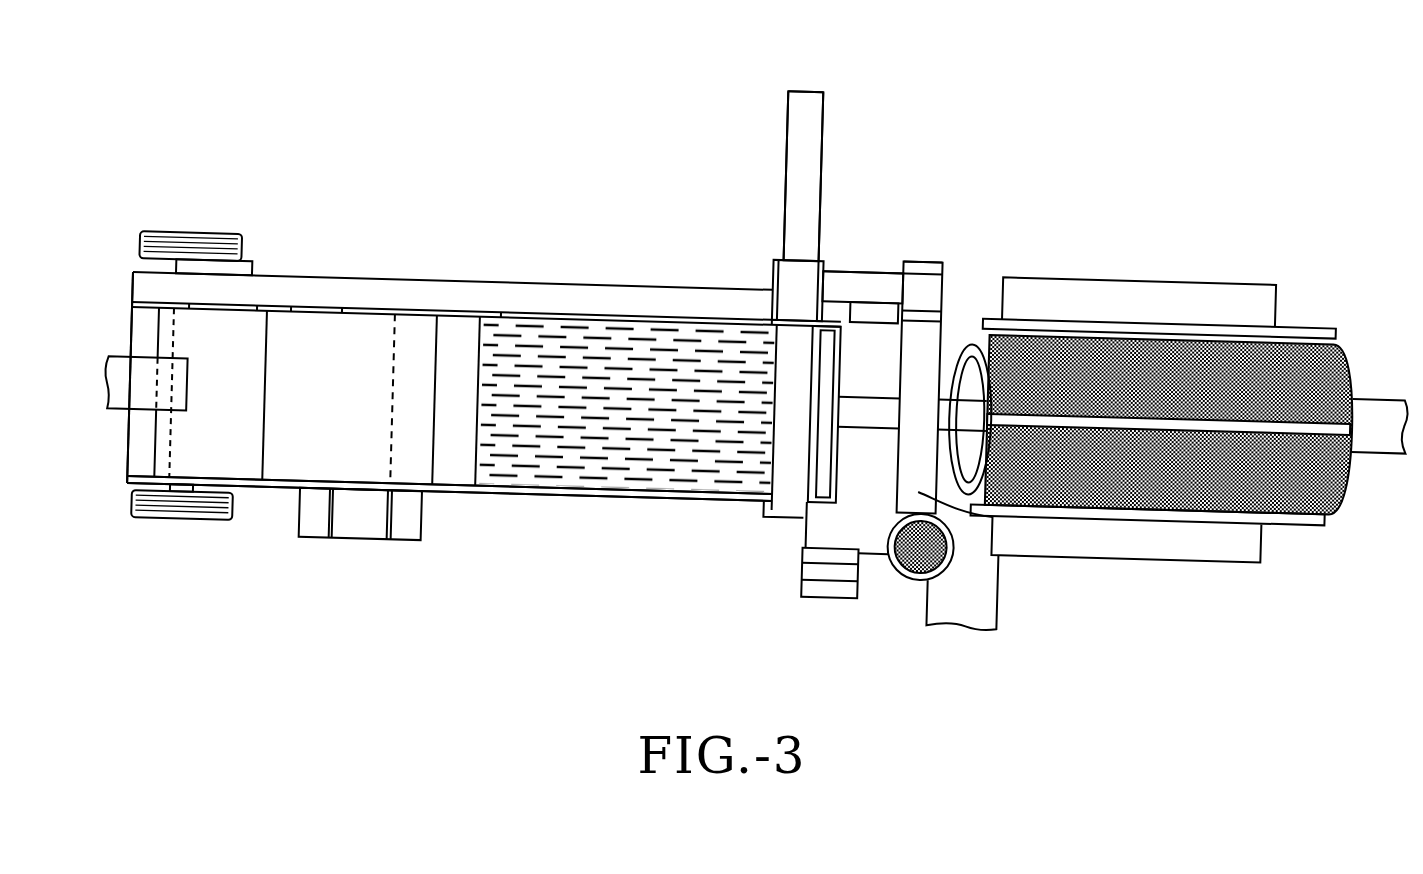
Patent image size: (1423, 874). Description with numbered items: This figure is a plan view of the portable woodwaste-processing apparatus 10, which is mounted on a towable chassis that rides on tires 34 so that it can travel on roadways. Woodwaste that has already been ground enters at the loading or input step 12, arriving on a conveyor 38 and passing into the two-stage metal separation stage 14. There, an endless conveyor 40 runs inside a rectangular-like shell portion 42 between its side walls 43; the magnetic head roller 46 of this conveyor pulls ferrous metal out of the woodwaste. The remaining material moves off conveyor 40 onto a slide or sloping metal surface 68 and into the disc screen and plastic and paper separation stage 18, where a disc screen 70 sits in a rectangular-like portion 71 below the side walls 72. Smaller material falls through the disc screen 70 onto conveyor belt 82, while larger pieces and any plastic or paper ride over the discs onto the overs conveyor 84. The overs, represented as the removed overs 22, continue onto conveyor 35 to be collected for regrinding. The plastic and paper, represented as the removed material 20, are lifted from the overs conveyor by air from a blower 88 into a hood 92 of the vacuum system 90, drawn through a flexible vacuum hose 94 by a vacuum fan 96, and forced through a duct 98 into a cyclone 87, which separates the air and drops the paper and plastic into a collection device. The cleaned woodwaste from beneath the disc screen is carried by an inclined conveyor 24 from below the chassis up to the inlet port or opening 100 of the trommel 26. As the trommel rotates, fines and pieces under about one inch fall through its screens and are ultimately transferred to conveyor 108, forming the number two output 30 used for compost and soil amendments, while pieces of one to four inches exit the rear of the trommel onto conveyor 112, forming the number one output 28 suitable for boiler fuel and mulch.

The portable apparatus 10 is at (900, 130).
The loading or input step (feed) 12 is at (118, 358).
The two-stage metal separation stage 14 is at (385, 265).
The disc screen and plastic and paper separation stage 18 is at (587, 543).
The plastic and paper removed from the woodwaste 20 is at (873, 258).
The overs removed from the process line 22 is at (787, 128).
The conveyor 24 is at (871, 392).
The trommel 26 is at (1297, 325).
The number one output 28 is at (1365, 382).
The number two output 30 is at (1013, 583).
The tires 34 is at (188, 248).
The conveyor 35 is at (812, 112).
The conveyor 38 is at (115, 400).
The endless conveyor 40 is at (240, 447).
The rectangular-like shell portion 42 is at (240, 302).
The side walls 43 is at (342, 302).
The magnetic head roller 46 is at (410, 333).
The slide or sloping metal surface 68 is at (462, 338).
The disc screen 70 is at (560, 457).
The rectangular-like portion 71 is at (745, 320).
The side walls 72 is at (607, 315).
The conveyor belt 82 is at (557, 287).
The overs conveyor 84 is at (786, 500).
The cyclone 87 is at (910, 572).
The blower 88 is at (877, 312).
The vacuum system 90 is at (933, 284).
The hood 92 is at (795, 268).
The flexible vacuum hose 94 is at (837, 272).
The vacuum fan 96 is at (928, 272).
The duct 98 is at (918, 492).
The inlet port or opening 100 is at (1005, 325).
The conveyor 108 is at (980, 603).
The conveyor 112 is at (1392, 445).